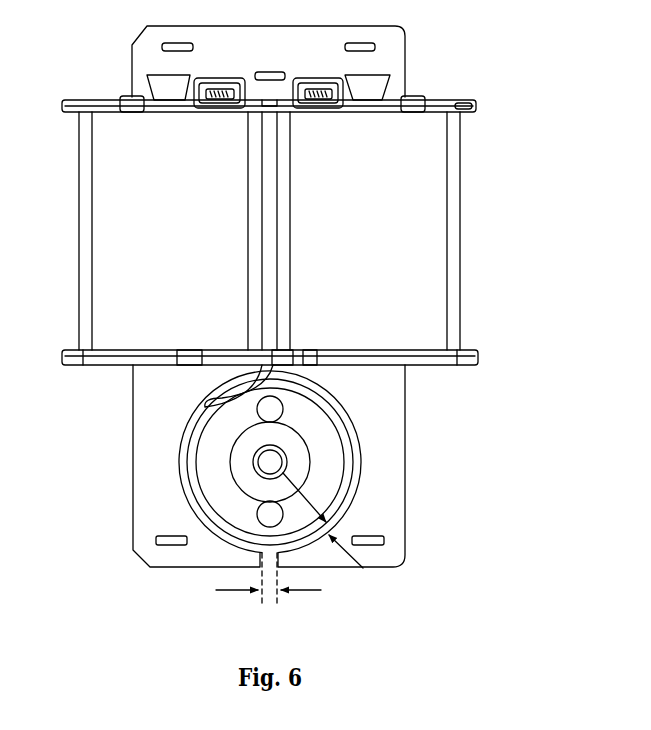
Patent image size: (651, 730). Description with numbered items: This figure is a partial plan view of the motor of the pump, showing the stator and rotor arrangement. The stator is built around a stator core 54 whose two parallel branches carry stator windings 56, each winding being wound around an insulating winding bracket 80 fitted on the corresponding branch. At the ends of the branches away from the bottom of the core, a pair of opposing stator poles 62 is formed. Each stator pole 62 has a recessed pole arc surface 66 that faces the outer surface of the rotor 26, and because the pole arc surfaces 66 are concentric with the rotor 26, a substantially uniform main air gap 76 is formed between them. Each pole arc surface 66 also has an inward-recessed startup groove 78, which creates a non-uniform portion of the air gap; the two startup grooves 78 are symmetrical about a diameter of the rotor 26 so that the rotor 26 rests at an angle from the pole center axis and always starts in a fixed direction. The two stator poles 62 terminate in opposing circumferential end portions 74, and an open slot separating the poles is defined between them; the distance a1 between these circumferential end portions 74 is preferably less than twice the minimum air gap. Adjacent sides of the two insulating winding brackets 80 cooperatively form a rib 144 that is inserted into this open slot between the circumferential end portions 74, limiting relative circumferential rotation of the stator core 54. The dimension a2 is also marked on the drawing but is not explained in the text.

The stator core 54 is at (383, 48).
The insulating winding bracket 80 is at (475, 103).
The stator windings 56 is at (422, 243).
The startup groove 78 is at (328, 386).
The pole arc surface 66 is at (358, 448).
The main air gap 76 is at (187, 433).
The rotor 26 is at (212, 468).
The rib 144 is at (213, 409).
The stator poles 62 is at (171, 505).
The circumferential end portions 74 is at (288, 561).
The distance between circumferential end portions a1 is at (253, 592).
The ring thickness dimension a2 is at (323, 520).